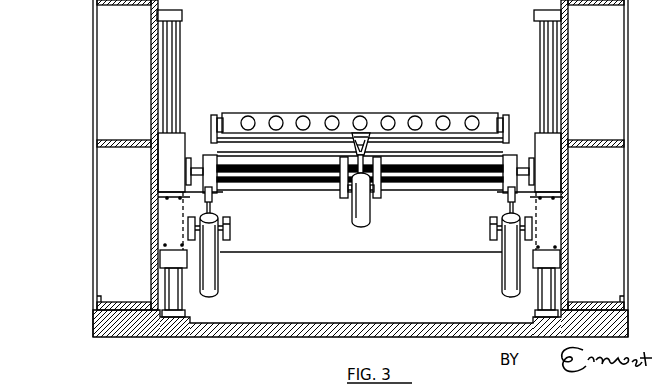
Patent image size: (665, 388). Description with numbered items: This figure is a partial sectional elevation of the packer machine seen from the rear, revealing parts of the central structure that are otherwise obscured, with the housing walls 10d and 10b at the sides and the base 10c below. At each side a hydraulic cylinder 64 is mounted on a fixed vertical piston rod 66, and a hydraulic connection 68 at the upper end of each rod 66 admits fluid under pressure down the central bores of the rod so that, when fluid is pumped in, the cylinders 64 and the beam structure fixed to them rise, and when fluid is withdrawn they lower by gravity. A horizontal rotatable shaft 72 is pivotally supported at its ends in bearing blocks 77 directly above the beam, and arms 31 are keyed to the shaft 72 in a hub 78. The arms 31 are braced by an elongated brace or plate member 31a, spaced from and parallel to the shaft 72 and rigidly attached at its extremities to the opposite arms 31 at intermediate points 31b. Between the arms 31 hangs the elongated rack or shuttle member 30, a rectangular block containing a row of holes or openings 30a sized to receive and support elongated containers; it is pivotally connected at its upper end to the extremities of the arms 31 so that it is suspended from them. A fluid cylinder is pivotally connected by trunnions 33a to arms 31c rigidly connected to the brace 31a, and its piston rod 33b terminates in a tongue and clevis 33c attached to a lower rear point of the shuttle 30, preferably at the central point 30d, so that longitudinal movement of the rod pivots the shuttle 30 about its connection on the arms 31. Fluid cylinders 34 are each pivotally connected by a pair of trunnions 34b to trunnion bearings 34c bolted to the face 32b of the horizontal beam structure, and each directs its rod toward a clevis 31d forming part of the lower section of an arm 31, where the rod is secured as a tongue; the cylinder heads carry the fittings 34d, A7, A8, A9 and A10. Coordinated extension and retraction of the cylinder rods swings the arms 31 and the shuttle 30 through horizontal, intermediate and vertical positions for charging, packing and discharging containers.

The right side wall of housing 10b is at (628, 33).
The bottom wall of housing 10c is at (137, 335).
The left side wall of housing 10d is at (93, 38).
The rack or shuttle member 30 is at (360, 108).
The holes or openings 30a is at (303, 117).
The central point 30d is at (393, 113).
The arms 31 is at (215, 115).
The brace or plate member 31a is at (268, 148).
The intermediate points 31b is at (363, 128).
The arms 31c is at (338, 178).
The clevis 31d is at (205, 198).
The face of horizontal beam structure 32b is at (355, 251).
The trunnions 33a is at (352, 193).
The piston rod 33b is at (355, 136).
The tongue and clevis 33c is at (365, 136).
The fluid cylinders 34 is at (362, 267).
The trunnions 34b is at (213, 221).
The trunnion bearings 34c is at (213, 233).
The piston rod head 34d is at (215, 201).
The hydraulic cylinder 64 is at (152, 131).
The fixed vertical piston rod 66 is at (182, 45).
The hydraulic connection 68 is at (183, 13).
The horizontal rotatable shaft 72 is at (272, 184).
The bearing blocks 77 is at (186, 165).
The hub 78 is at (207, 160).
The actuator cylinder A7 is at (362, 212).
The actuator piston A8 is at (367, 203).
The cylinder port A9 is at (220, 288).
The cylinder port A10 is at (210, 225).